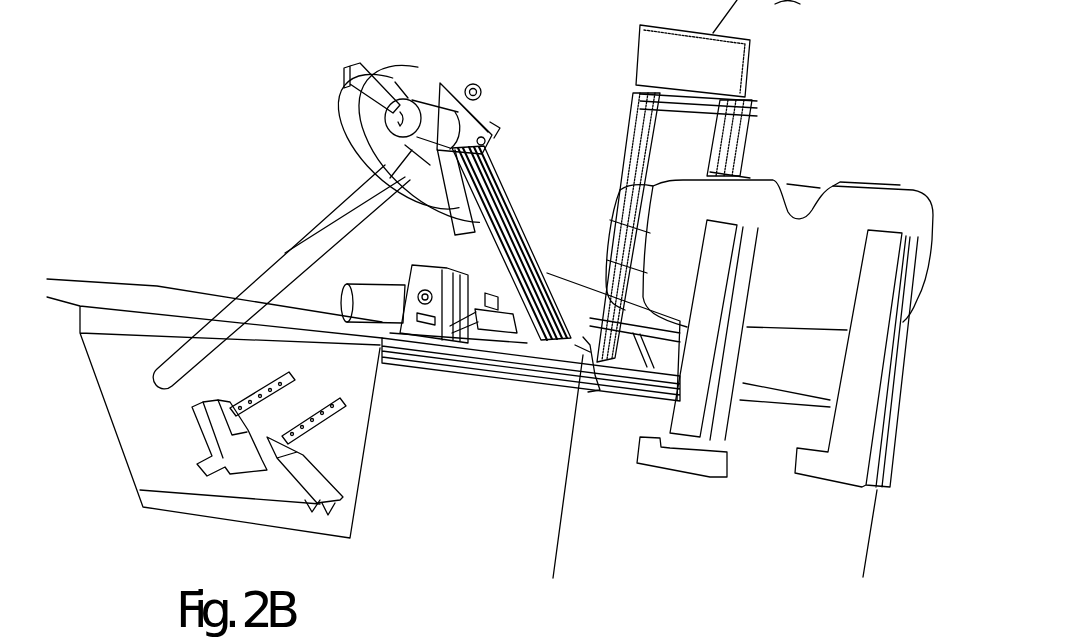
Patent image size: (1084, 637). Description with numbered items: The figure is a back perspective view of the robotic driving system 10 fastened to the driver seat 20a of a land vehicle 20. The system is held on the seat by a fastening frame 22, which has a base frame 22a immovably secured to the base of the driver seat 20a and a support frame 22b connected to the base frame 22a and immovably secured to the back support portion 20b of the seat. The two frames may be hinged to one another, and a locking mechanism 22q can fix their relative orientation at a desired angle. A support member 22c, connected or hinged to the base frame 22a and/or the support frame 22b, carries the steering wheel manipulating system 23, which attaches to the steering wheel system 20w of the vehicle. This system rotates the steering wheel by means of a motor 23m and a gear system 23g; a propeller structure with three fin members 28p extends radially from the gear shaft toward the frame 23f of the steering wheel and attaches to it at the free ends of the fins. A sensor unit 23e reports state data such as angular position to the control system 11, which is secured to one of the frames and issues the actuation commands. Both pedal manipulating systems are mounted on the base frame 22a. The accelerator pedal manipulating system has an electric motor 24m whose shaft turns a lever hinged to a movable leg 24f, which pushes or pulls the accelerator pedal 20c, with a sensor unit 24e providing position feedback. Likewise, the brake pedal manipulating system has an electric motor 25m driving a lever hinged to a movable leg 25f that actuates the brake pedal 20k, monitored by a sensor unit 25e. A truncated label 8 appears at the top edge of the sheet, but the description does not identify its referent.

The robotic driving system 10 is at (190, 66).
The reference numeral (partially shown) 8 is at (260, 10).
The control system 11 is at (573, 283).
The land vehicle 20 is at (780, 524).
The driver seat 20a is at (530, 393).
The back support portion 20b is at (748, 178).
The accelerator pedal 20c is at (323, 480).
The brake pedal 20k is at (233, 443).
The steering wheel system 20w is at (372, 157).
The fastening frame 22 is at (578, 203).
The base frame 22a is at (500, 380).
The support frame 22b is at (628, 172).
The support member 22c is at (488, 298).
The locking mechanism 22q is at (578, 350).
The steering wheel manipulating system 23 is at (352, 123).
The sensor unit 23e is at (478, 90).
The steering wheel frame 23f is at (386, 68).
The gear system 23g is at (487, 125).
The motor 23m is at (430, 110).
The sensor unit 24e is at (425, 293).
The movable leg 24f is at (343, 400).
The electric motor 24m is at (507, 273).
The sensor unit 25e is at (413, 267).
The movable leg 25f is at (290, 377).
The electric motor 25m is at (348, 320).
The fin members 28p is at (350, 78).